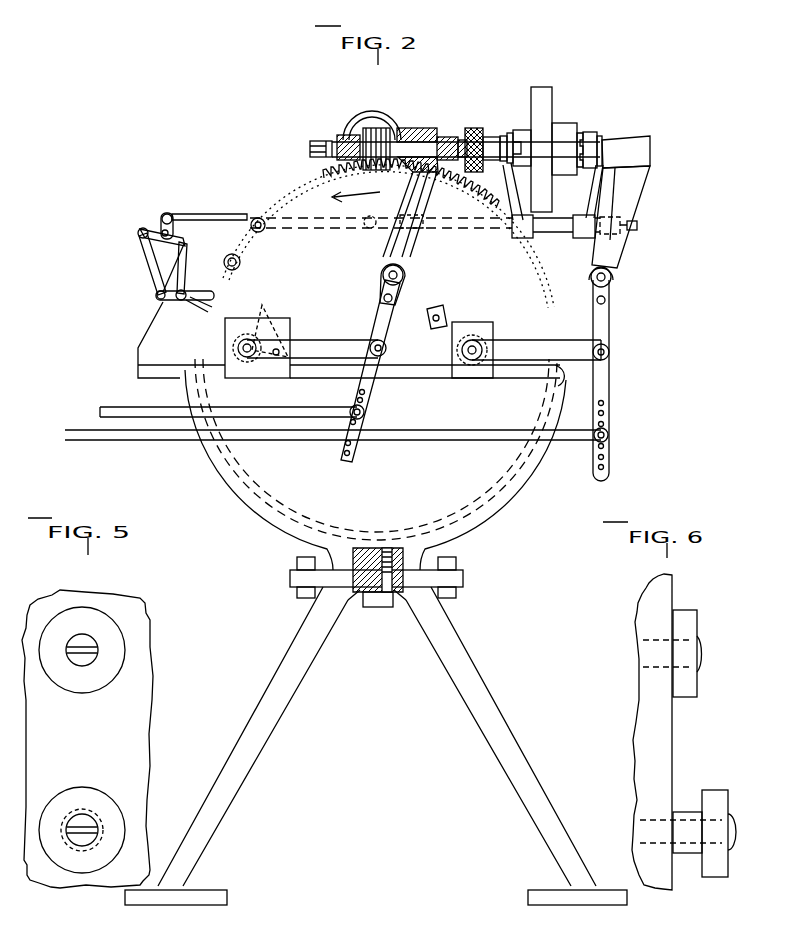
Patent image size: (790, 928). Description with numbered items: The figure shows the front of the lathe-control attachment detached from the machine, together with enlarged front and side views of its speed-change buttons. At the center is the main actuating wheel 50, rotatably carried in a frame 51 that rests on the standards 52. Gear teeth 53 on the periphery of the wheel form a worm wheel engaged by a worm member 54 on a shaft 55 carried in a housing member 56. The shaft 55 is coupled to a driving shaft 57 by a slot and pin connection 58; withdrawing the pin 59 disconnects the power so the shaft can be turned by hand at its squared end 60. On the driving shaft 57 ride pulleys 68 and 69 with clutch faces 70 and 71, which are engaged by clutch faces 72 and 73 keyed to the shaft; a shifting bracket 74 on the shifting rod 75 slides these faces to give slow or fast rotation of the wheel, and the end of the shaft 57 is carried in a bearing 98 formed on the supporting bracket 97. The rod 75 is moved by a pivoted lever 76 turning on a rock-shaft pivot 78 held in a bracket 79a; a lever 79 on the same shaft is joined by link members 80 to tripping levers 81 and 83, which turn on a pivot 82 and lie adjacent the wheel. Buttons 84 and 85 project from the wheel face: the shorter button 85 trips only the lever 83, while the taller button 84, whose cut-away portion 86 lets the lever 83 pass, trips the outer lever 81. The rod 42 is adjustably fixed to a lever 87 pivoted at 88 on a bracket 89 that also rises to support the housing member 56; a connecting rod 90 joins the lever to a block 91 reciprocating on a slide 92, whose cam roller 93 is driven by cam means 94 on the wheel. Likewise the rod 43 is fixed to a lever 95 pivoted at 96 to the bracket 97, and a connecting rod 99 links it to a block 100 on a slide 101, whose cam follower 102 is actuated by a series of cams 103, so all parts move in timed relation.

In FIG. 2, the rod member 42 is at (112, 405).
In FIG. 2, the rod 43 is at (112, 441).
In FIG. 2, the main actuating wheel 50 is at (303, 198).
In FIG. 5, the main actuating wheel 50 is at (138, 740).
In FIG. 6, the main actuating wheel 50 is at (668, 735).
In FIG. 2, the frame 51 is at (253, 504).
In FIG. 2, the standards 52 is at (265, 734).
In FIG. 2, the gear teeth 53 is at (330, 168).
In FIG. 2, the worm member 54 is at (380, 128).
In FIG. 2, the shaft 55 is at (433, 150).
In FIG. 2, the housing member 56 is at (410, 128).
In FIG. 2, the driving shaft 57 is at (503, 136).
In FIG. 2, the slot and pin connection 58 is at (475, 128).
In FIG. 2, the pin 59 is at (470, 140).
In FIG. 2, the squared end 60 is at (312, 140).
In FIG. 2, the pulley 68 is at (547, 100).
In FIG. 2, the pulley 69 is at (570, 125).
In FIG. 2, the clutch face 70 is at (526, 132).
In FIG. 2, the clutch face 71 is at (585, 134).
In FIG. 2, the clutch face 72 is at (512, 133).
In FIG. 2, the clutch face 73 is at (595, 134).
In FIG. 2, the shifting bracket 74 is at (597, 200).
In FIG. 2, the shifting rod 75 is at (231, 214).
In FIG. 2, the pivoted lever 76 is at (172, 218).
In FIG. 2, the pivot 78 is at (163, 215).
In FIG. 2, the lever 79 is at (140, 230).
In FIG. 2, the bracket 79a is at (150, 330).
In FIG. 2, the link member 80 is at (186, 250).
In FIG. 2, the tripping lever 81 is at (157, 297).
In FIG. 2, the pivot 82 is at (180, 300).
In FIG. 2, the tripping lever 83 is at (188, 286).
In FIG. 2, the button 84 is at (241, 262).
In FIG. 5, the button 84 is at (120, 810).
In FIG. 6, the button 84 is at (713, 791).
In FIG. 2, the button 85 is at (264, 230).
In FIG. 5, the button 85 is at (120, 657).
In FIG. 6, the button 85 is at (700, 690).
In FIG. 5, the cut-away portion 86 is at (100, 836).
In FIG. 6, the cut-away portion 86 is at (684, 812).
In FIG. 2, the lever 87 is at (366, 411).
In FIG. 2, the pivot 88 is at (406, 276).
In FIG. 2, the bracket 89 is at (410, 252).
In FIG. 2, the connecting rod 90 is at (320, 358).
In FIG. 2, the block 91 is at (260, 378).
In FIG. 2, the slide 92 is at (183, 354).
In FIG. 2, the cam roller 93 is at (247, 338).
In FIG. 2, the cam means 94 is at (272, 318).
In FIG. 2, the lever 95 is at (610, 409).
In FIG. 2, the pivot 96 is at (611, 283).
In FIG. 2, the supporting bracket 97 is at (617, 257).
In FIG. 2, the bearing 98 is at (652, 138).
In FIG. 2, the connecting rod 99 is at (535, 362).
In FIG. 2, the block 100 is at (490, 331).
In FIG. 2, the slide 101 is at (508, 360).
In FIG. 2, the cam follower 102 is at (473, 340).
In FIG. 2, the cam means 103 is at (438, 306).